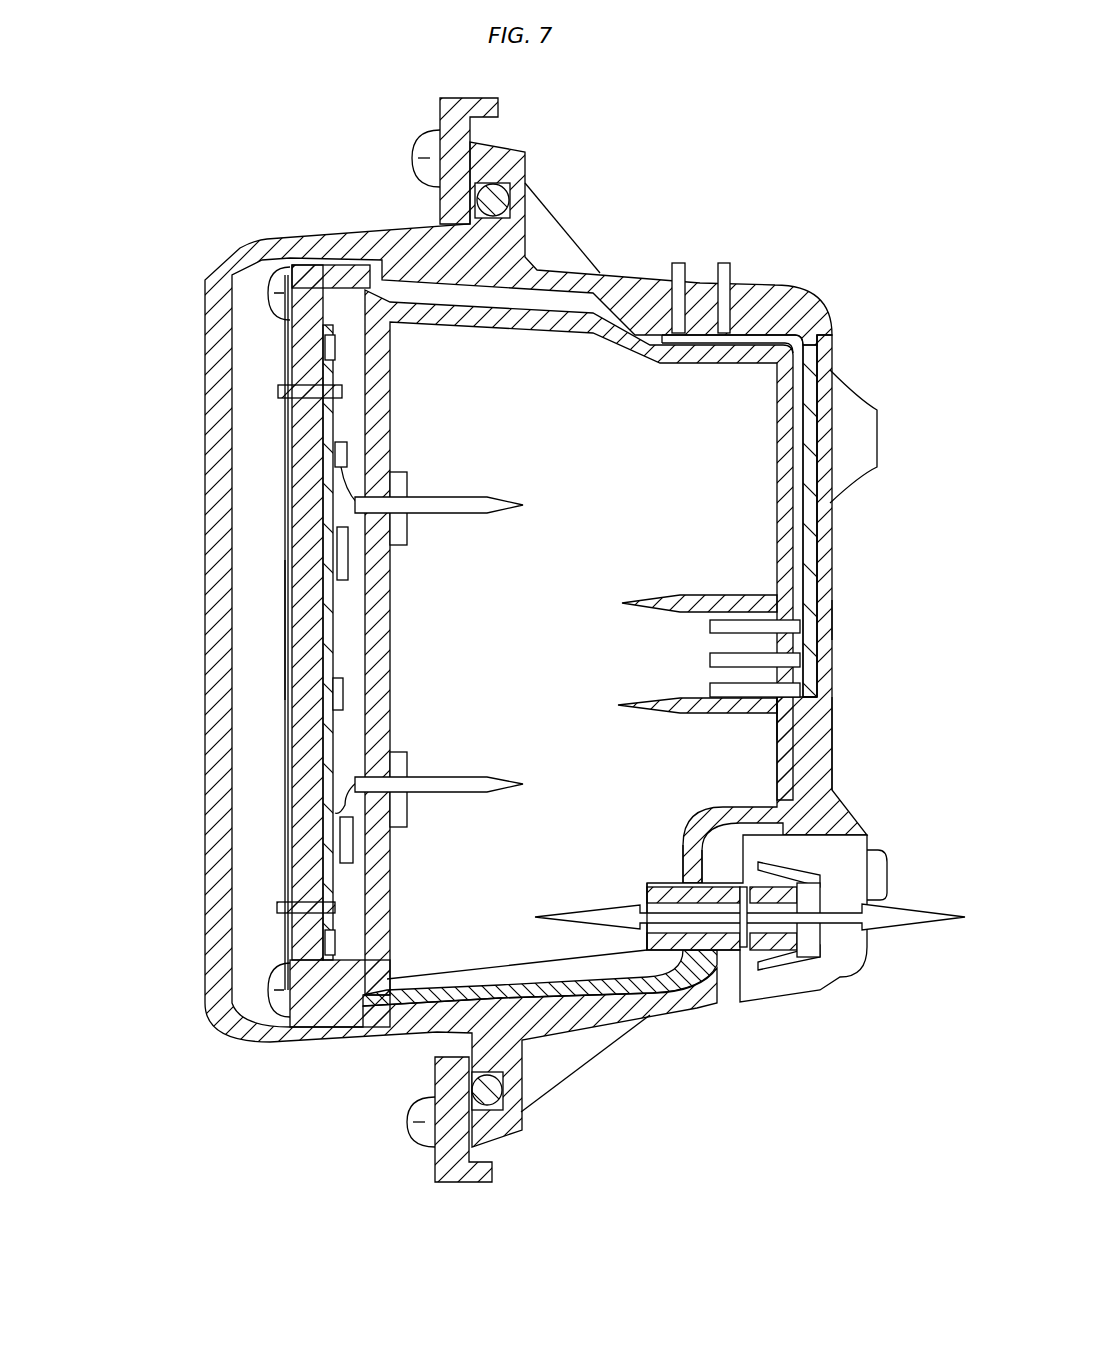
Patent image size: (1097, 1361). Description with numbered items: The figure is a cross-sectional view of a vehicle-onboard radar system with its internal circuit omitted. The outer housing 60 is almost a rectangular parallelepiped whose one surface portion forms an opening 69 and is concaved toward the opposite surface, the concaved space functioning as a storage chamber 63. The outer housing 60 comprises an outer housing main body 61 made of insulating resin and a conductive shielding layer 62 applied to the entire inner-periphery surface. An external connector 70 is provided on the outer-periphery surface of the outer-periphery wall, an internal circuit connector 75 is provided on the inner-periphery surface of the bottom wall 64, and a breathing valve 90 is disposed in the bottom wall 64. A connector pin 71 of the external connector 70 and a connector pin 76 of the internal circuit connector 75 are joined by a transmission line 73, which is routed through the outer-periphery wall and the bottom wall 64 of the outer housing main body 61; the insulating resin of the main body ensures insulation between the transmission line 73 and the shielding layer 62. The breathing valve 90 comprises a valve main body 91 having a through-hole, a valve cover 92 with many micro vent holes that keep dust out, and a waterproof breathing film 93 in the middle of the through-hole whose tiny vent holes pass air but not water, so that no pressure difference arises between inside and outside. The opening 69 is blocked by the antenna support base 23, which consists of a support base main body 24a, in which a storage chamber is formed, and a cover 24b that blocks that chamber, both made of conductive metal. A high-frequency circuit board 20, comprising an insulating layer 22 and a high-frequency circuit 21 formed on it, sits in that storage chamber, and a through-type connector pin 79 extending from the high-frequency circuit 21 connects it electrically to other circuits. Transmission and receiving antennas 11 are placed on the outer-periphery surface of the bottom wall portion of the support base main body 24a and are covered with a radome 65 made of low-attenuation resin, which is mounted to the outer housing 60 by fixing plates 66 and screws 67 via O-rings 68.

The transmission antenna 11 is at (293, 483).
The high-frequency circuit board 20 is at (135, 558).
The high-frequency circuit 21 is at (293, 565).
The insulating layer 22 is at (300, 640).
The antenna support base 23 is at (330, 1122).
The support base main body 24a is at (295, 1020).
The cover 24b is at (375, 980).
The outer housing 60 is at (905, 680).
The outer housing main body 61 is at (813, 763).
The conductive shielding layer 62 is at (787, 740).
The storage chamber 63 is at (758, 427).
The bottom wall 64 is at (822, 533).
The radome 65 is at (238, 262).
The fixing plate 66 is at (500, 110).
The screw 67 is at (420, 150).
The O-ring 68 is at (500, 1092).
The opening 69 is at (428, 313).
The external connector 70 is at (740, 297).
The connector pin 71 is at (724, 270).
The transmission line 73 is at (810, 558).
The internal circuit connector 75 is at (705, 600).
The connector pin 76 is at (710, 627).
The through-type connector pin 79 is at (470, 500).
The breathing valve 90 is at (910, 1047).
The valve main body 91 is at (695, 1000).
The valve cover 92 is at (830, 950).
The waterproof breathing film 93 is at (790, 945).